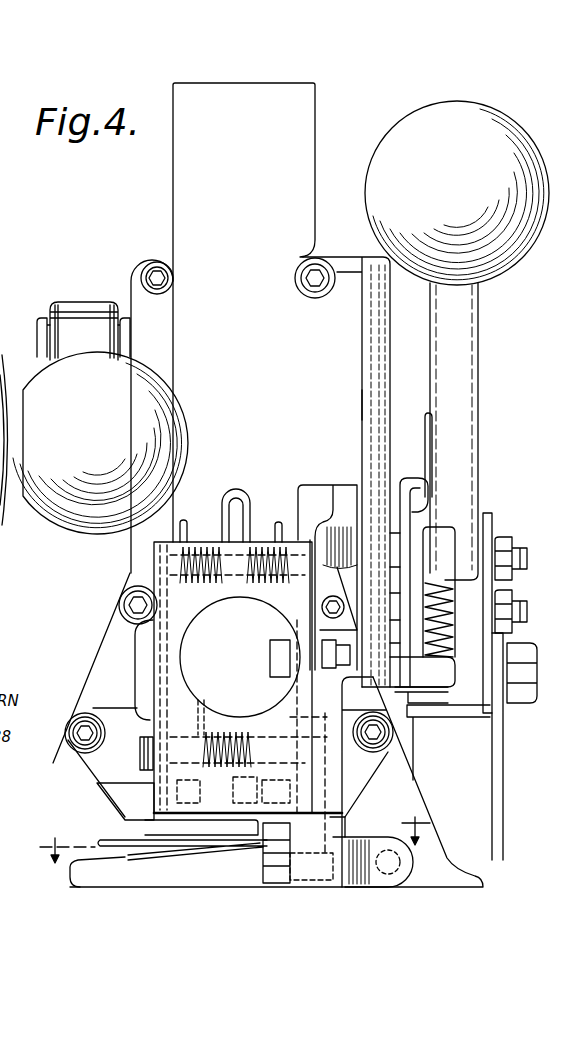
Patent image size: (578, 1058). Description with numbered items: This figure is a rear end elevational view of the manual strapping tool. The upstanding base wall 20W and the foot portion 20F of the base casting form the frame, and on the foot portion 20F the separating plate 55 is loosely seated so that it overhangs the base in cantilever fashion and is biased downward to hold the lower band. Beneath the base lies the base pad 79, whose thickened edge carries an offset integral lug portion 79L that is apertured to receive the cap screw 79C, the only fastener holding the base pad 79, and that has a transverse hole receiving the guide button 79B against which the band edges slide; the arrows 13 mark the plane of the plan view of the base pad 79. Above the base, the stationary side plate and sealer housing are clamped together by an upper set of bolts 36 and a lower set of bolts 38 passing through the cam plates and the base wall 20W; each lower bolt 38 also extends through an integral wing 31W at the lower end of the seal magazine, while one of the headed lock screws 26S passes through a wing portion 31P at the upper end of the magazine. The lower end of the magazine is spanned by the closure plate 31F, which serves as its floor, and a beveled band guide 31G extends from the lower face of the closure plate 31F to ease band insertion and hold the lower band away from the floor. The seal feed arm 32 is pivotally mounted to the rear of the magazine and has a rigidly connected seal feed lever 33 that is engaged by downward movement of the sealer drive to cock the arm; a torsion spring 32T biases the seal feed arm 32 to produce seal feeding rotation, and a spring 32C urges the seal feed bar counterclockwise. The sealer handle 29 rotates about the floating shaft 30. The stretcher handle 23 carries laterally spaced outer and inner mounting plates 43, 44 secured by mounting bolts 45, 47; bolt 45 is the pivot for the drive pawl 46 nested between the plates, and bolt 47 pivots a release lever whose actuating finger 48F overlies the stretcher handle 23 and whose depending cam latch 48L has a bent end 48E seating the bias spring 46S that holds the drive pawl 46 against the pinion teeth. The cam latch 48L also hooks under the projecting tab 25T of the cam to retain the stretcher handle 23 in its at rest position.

The section line 13 is at (235, 834).
The upstanding base wall 20W is at (438, 830).
The foot portion 20F is at (450, 890).
The stretcher handle 23 is at (462, 388).
The projecting tab 25T is at (430, 720).
The headed lock screws 26S is at (157, 268).
The sealer handle 29 is at (82, 315).
The floating shaft 30 is at (36, 338).
The wing portion 31P is at (340, 402).
The integral wing 31W is at (120, 722).
The closure plate 31F is at (137, 803).
The beveled band guide 31G is at (233, 823).
The seal feed arm 32 is at (283, 726).
The spring 32C is at (198, 704).
The torsion spring 32T is at (203, 540).
The seal feed lever 33 is at (352, 487).
The upper set of bolts 36 is at (122, 603).
The lower set of bolts 38 is at (83, 735).
The outer mounting plate 43 is at (494, 512).
The inner mounting plate 44 is at (430, 499).
The mounting bolt 45 is at (527, 613).
The drive pawl 46 is at (443, 534).
The bias spring 46S is at (450, 590).
The mounting bolt 47 is at (526, 556).
The cam latch 48L is at (372, 338).
The actuating finger 48F is at (425, 440).
The bent end 48E is at (415, 678).
The separating plate 55 is at (127, 840).
The base pad 79 is at (175, 877).
The guide button 79B is at (263, 840).
The cap screw 79C is at (315, 870).
The lug portion 79L is at (333, 838).